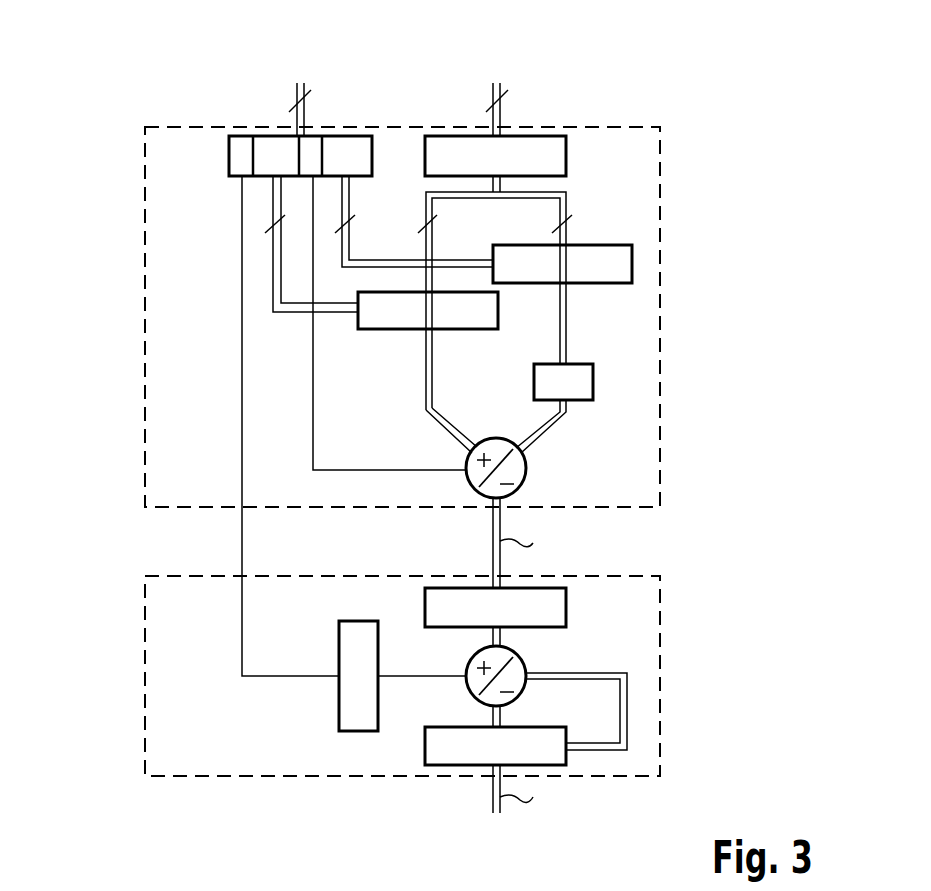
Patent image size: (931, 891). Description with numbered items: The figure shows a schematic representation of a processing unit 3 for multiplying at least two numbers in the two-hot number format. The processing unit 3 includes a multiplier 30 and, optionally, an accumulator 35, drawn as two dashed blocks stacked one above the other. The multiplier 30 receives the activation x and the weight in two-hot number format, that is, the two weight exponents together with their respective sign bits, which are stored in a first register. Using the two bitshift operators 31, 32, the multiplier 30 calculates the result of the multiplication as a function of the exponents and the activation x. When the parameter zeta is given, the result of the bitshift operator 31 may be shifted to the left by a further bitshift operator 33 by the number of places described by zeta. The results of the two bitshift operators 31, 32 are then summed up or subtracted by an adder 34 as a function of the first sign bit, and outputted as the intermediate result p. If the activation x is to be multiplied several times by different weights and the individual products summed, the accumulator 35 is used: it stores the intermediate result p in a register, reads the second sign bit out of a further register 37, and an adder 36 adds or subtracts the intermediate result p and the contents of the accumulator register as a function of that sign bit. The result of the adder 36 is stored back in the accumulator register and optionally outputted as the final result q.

The processing unit 3 is at (668, 101).
The multiplier 30 is at (145, 160).
The bitshift operator 31 is at (632, 263).
The bitshift operator 32 is at (498, 310).
The further bitshift operator 33 is at (593, 380).
The adder 34 is at (492, 438).
The accumulator 35 is at (145, 675).
The adder 36 is at (517, 658).
The further register 37 is at (339, 716).